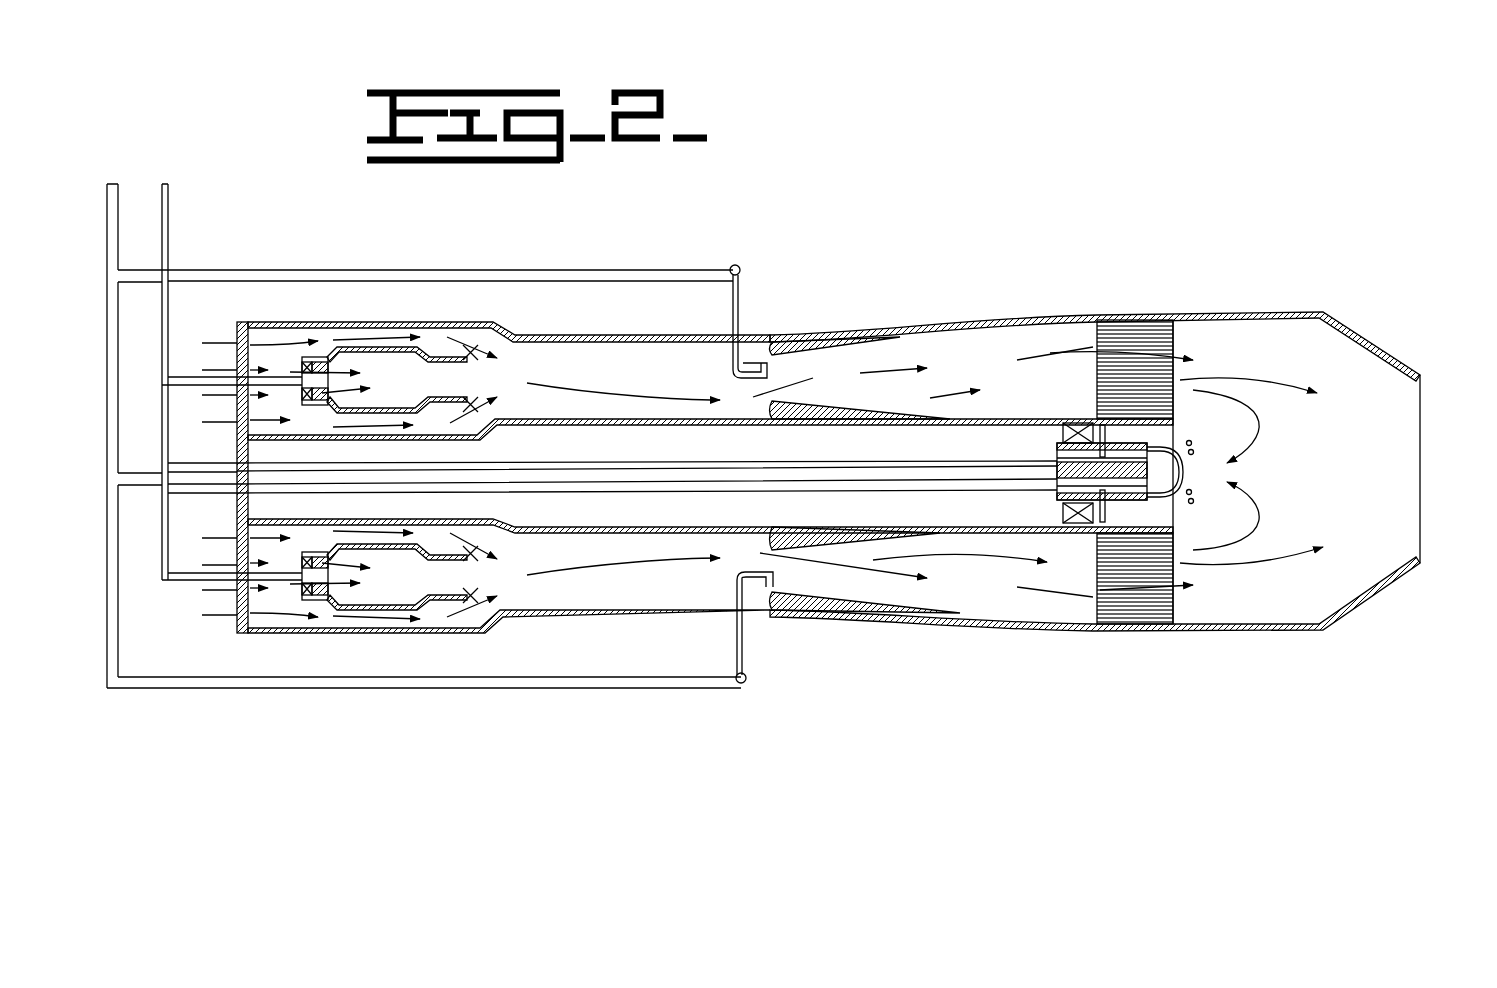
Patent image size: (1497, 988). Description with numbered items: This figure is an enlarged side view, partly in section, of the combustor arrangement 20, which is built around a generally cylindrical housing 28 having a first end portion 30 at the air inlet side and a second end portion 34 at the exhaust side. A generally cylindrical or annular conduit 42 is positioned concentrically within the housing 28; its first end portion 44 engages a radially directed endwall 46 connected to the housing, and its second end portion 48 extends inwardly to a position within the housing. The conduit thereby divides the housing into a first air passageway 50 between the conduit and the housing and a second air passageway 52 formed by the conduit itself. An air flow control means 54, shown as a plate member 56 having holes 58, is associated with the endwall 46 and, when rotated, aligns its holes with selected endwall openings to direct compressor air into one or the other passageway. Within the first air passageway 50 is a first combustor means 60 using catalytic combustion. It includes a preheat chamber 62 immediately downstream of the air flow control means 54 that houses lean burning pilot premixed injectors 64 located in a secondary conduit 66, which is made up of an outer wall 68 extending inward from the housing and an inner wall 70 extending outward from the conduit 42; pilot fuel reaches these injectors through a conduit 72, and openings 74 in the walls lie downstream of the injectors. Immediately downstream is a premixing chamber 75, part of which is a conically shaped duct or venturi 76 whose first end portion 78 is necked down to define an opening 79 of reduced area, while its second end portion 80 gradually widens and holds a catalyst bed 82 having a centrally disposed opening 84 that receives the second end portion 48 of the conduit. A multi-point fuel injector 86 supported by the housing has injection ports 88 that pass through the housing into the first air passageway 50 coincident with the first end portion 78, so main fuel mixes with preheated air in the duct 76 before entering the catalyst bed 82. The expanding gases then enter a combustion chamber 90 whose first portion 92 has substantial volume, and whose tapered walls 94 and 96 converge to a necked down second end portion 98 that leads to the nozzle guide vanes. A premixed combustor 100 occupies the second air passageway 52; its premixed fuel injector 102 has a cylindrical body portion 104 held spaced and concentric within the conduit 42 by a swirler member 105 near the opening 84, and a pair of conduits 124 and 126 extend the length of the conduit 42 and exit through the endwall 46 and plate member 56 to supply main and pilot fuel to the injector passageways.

The combustor arrangement 20 is at (945, 250).
The housing 28 is at (973, 622).
The first end portion 30 is at (370, 647).
The second end portion 34 is at (1305, 640).
The conduit 42 is at (625, 533).
The first end portion 44 is at (318, 518).
The endwall 46 is at (253, 355).
The second end portion 48 is at (1077, 530).
The first air passageway 50 is at (581, 378).
The second air passageway 52 is at (581, 456).
The air flow control means 54 is at (228, 640).
The plate member 56 is at (233, 326).
The holes 58 is at (240, 405).
The first combustor means 60 is at (1095, 270).
The preheat chamber 62 is at (472, 320).
The pilot premixed injectors 64 is at (317, 381).
The secondary conduit 66 is at (403, 346).
The outer wall 68 is at (346, 348).
The inner wall 70 is at (430, 412).
The conduit 72 is at (187, 578).
The openings 74 is at (458, 474).
The premixing chamber 75 is at (785, 272).
The duct 76 is at (887, 333).
The first end portion 78 is at (787, 333).
The opening 79 is at (803, 590).
The second end portion 80 is at (1075, 312).
The catalyst bed 82 is at (1133, 333).
The centrally disposed opening 84 is at (1150, 415).
The multi-point fuel injector 86 is at (733, 328).
The injection ports 88 is at (733, 365).
The combustion chamber 90 is at (1291, 478).
The first portion 92 is at (1270, 347).
The tapered wall 94 is at (1380, 340).
The tapered wall 96 is at (1383, 590).
The second end portion 98 is at (1425, 400).
The premixed combustor 100 is at (1047, 497).
The premixed fuel injector 102 is at (1057, 453).
The cylindrical body portion 104 is at (1143, 497).
The swirler member 105 is at (1078, 422).
The conduit 124 is at (595, 490).
The conduit 126 is at (842, 461).